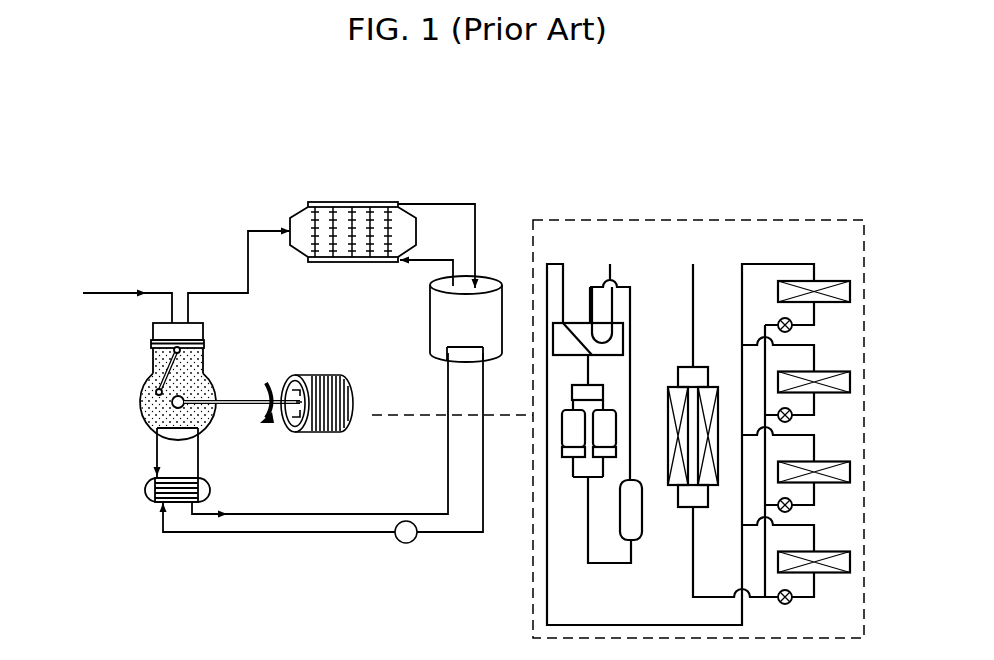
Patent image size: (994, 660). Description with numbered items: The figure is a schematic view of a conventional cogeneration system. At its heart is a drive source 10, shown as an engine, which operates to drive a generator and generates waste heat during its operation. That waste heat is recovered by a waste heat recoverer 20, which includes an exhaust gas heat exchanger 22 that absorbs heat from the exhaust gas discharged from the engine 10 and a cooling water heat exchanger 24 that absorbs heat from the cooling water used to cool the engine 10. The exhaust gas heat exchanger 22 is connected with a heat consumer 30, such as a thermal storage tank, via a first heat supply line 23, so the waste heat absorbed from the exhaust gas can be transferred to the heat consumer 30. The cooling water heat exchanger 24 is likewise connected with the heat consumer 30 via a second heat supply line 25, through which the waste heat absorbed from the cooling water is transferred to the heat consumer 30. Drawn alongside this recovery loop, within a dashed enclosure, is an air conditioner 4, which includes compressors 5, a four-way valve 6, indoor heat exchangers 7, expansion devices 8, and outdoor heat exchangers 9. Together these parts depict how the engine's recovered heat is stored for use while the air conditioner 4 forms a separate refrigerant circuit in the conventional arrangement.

The air conditioner 4 is at (682, 217).
The compressors 5 is at (569, 431).
The 4-way valve 6 is at (581, 323).
The indoor heat exchangers 7 is at (852, 292).
The expansion devices 8 is at (795, 332).
The outdoor heat exchangers 9 is at (714, 386).
The drive source 10 is at (142, 402).
The waste heat recoverer 20 is at (367, 193).
The exhaust gas heat exchanger 22 is at (352, 216).
The first heat supply line 23 is at (444, 203).
The cooling water heat exchanger 24 is at (147, 484).
The return pipe with pump 25 is at (283, 534).
The heat consumer 30 is at (482, 283).